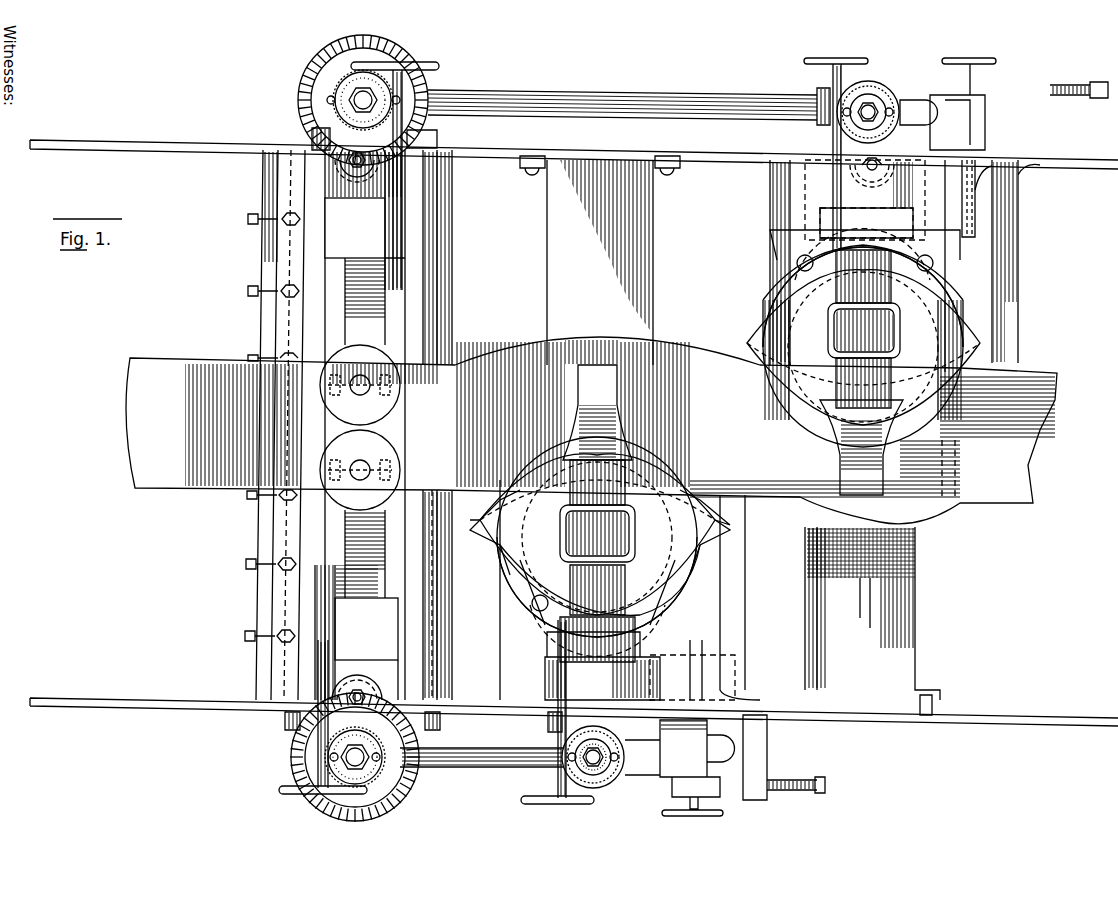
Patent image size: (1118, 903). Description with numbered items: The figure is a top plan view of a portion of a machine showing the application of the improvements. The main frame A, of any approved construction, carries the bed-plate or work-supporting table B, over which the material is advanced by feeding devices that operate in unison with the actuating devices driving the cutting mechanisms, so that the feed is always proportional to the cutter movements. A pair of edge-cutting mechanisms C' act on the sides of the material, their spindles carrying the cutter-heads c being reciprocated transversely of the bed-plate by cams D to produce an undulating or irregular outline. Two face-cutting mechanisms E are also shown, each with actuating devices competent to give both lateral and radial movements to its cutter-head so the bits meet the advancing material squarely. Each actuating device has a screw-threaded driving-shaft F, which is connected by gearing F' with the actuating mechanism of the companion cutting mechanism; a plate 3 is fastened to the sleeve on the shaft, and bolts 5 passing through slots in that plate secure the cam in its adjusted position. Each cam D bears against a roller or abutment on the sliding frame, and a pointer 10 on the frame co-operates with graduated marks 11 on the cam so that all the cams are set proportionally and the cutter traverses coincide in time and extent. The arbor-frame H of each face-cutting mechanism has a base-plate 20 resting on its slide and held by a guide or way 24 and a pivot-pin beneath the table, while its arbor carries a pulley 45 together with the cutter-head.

The main frame A is at (574, 441).
The bed-plate B is at (591, 430).
The slide standard C' is at (325, 427).
The cutter-head c is at (360, 427).
The cam D is at (318, 97).
The cutting mechanism E is at (555, 580).
The driving-shaft F is at (528, 428).
The pinion F' is at (956, 149).
The arbor-frame H is at (725, 442).
The plate 3 is at (430, 786).
The bolts 5 is at (593, 753).
The pointer or marker 10 is at (832, 150).
The graduated marks 11 is at (622, 467).
The base-plate 20 is at (734, 432).
The guide or way 24 is at (812, 304).
The pulley 45 is at (730, 432).